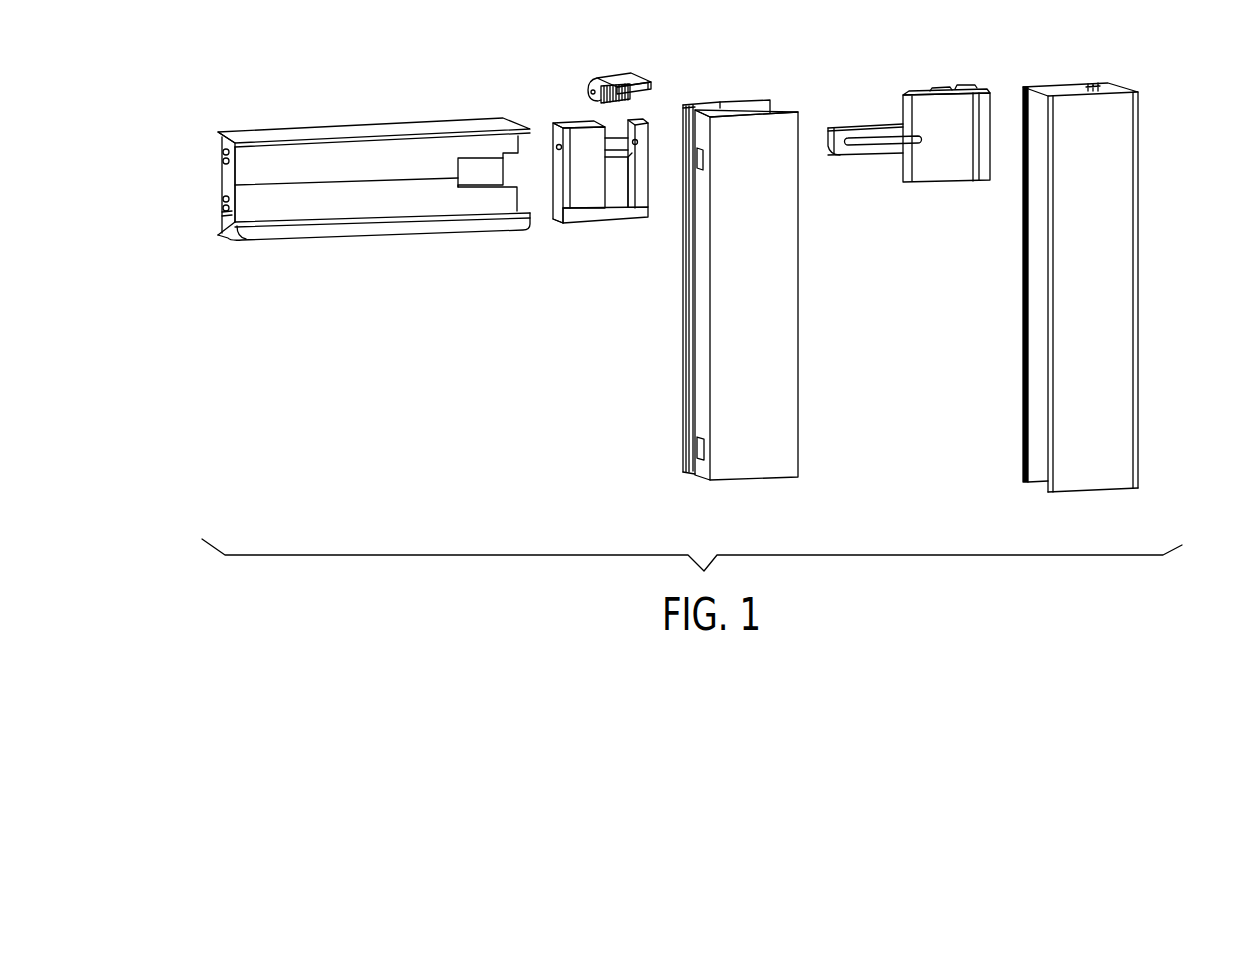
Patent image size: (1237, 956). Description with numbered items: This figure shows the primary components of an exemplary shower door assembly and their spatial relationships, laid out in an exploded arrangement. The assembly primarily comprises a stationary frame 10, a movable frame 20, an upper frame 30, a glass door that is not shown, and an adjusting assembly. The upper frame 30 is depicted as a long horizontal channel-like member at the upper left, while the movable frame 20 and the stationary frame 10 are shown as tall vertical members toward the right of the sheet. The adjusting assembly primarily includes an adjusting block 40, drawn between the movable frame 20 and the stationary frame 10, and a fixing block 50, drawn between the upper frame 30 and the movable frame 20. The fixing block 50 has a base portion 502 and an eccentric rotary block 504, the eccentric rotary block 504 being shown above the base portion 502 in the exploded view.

The stationary frame 10 is at (1113, 215).
The movable frame 20 is at (783, 335).
The upper frame 30 is at (272, 133).
The adjusting block 40 is at (942, 172).
The fixing block 50 is at (562, 104).
The base portion 502 is at (585, 200).
The eccentric rotary block 504 is at (622, 78).